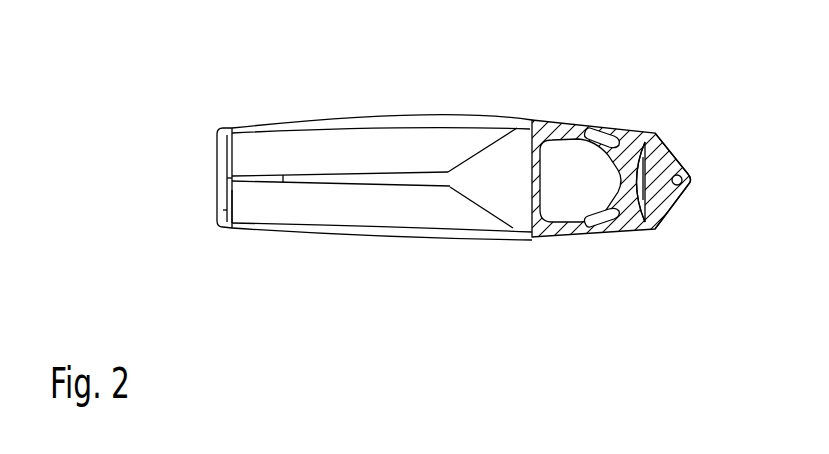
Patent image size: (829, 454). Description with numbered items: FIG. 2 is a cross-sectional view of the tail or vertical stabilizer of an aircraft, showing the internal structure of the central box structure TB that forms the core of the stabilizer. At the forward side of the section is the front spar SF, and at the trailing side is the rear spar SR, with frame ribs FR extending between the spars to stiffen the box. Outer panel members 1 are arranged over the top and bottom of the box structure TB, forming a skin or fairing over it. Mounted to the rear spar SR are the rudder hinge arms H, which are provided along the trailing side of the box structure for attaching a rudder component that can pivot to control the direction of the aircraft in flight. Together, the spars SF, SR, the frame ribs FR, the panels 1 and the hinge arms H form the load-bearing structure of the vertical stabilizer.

The outer panel member 1 is at (366, 95).
The central box structure TB is at (258, 140).
The front spar SF is at (250, 222).
The frame ribs FR is at (446, 200).
The rear spar SR is at (514, 236).
The hinge arms H is at (676, 157).